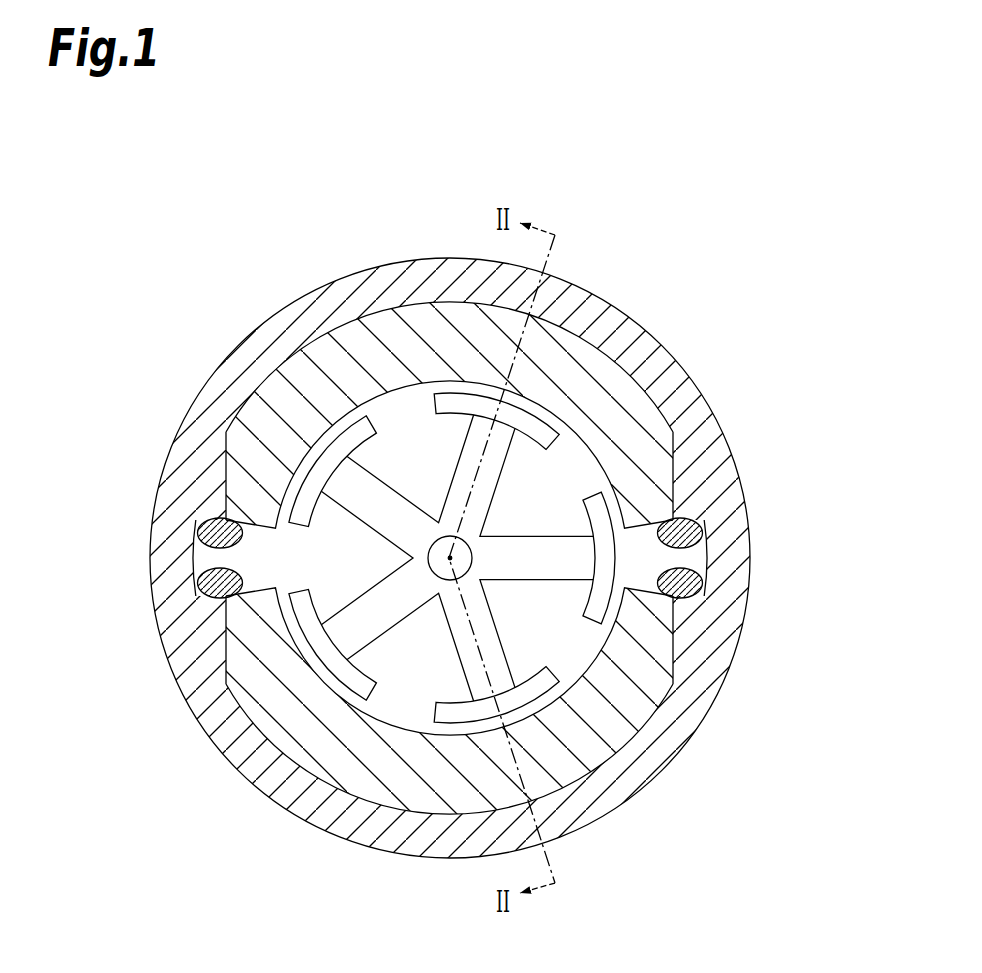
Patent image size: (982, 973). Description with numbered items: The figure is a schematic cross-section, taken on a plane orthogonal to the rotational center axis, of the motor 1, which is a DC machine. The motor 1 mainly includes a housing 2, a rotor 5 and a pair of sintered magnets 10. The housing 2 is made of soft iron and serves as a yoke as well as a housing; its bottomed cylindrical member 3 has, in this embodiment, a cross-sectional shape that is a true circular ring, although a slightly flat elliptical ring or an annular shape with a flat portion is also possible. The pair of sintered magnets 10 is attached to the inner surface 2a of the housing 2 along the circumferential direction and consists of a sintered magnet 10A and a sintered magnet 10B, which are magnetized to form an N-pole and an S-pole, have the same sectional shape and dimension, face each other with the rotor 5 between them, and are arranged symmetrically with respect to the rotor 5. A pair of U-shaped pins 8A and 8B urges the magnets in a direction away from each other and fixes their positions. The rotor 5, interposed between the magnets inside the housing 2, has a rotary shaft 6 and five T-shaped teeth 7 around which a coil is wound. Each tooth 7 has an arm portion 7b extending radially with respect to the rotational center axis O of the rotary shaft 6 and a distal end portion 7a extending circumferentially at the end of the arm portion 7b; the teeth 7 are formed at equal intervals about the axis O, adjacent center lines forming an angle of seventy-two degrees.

The motor 1 is at (266, 268).
The housing 2 is at (462, 553).
The inner surface 2a is at (632, 399).
The bottomed cylindrical member 3 is at (706, 690).
The rotor 5 is at (535, 557).
The rotary shaft 6 is at (473, 561).
The tooth 7 is at (452, 558).
The distal end portion 7a is at (355, 443).
The arm portion 7b is at (377, 490).
The U-shaped pin 8A is at (198, 583).
The U-shaped pin 8B is at (702, 583).
The pair of sintered magnets 10 is at (449, 555).
The sintered magnet 10A is at (352, 345).
The sintered magnet 10B is at (340, 765).
The rotational center axis O is at (447, 556).